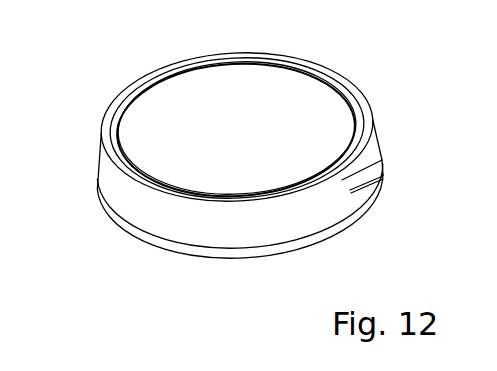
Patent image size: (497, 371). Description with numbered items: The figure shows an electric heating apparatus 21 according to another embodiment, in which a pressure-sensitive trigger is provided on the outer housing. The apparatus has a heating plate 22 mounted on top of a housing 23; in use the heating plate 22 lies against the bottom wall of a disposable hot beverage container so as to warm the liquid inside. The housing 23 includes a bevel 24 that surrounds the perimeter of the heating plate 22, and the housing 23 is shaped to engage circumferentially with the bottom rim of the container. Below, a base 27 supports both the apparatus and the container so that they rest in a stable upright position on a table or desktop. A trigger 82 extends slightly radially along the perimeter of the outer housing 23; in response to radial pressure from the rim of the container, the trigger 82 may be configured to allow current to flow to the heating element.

The electric heating apparatus 21 is at (98, 162).
The heating plate 22 is at (243, 85).
The housing 23 is at (313, 207).
The bevel 24 is at (341, 174).
The base 27 is at (242, 255).
The trigger 82 is at (373, 177).